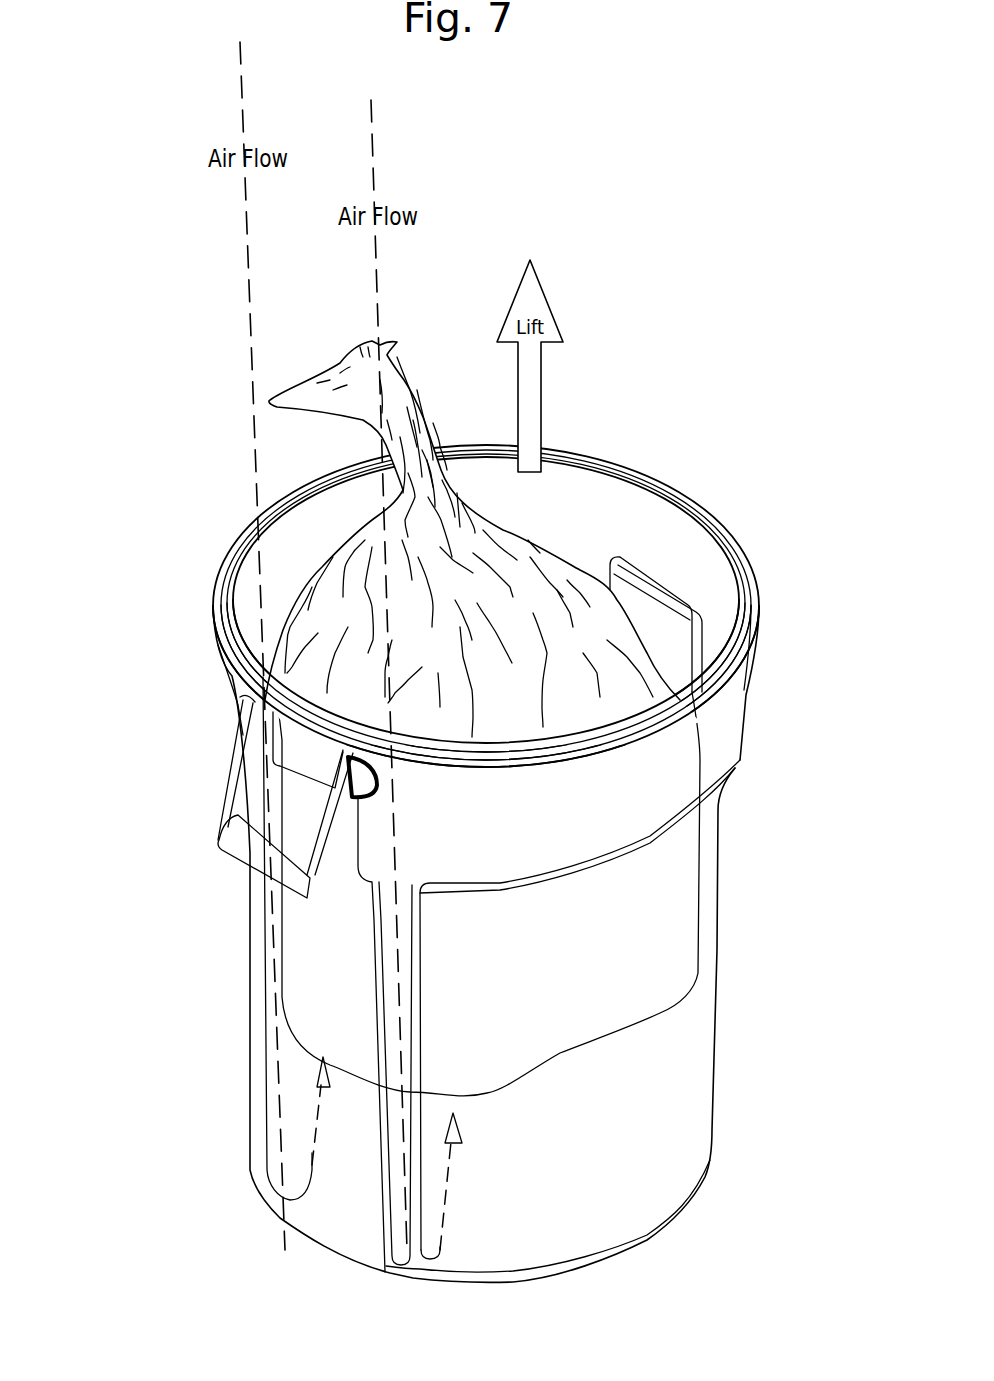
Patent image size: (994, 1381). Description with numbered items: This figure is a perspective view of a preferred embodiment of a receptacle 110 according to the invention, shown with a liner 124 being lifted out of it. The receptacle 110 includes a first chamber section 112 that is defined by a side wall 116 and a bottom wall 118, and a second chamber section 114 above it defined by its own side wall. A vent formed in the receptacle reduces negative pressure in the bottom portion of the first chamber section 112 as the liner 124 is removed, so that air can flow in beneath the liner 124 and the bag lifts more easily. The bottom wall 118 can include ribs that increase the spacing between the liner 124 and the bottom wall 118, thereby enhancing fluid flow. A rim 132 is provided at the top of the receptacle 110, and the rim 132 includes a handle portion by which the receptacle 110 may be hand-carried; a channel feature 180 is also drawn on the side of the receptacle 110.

The receptacle 110 is at (716, 434).
The first chamber section 112 is at (191, 1125).
The second chamber section 114 is at (186, 704).
The side wall 116 is at (693, 1123).
The bottom wall 118 is at (484, 1285).
The liner 124 is at (347, 360).
The rim 132 is at (728, 538).
The air channel 180 is at (407, 1037).